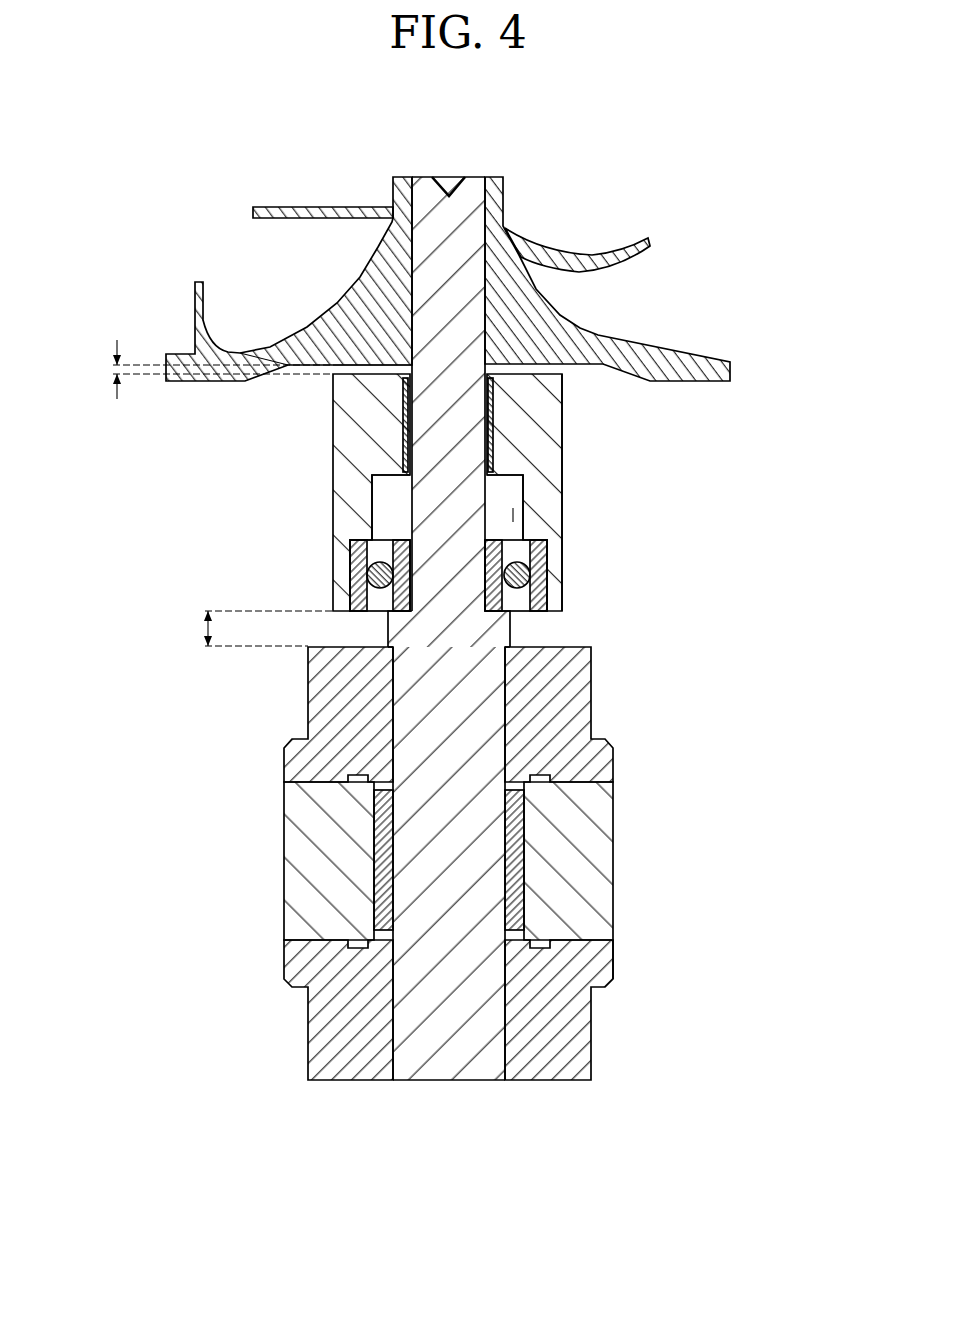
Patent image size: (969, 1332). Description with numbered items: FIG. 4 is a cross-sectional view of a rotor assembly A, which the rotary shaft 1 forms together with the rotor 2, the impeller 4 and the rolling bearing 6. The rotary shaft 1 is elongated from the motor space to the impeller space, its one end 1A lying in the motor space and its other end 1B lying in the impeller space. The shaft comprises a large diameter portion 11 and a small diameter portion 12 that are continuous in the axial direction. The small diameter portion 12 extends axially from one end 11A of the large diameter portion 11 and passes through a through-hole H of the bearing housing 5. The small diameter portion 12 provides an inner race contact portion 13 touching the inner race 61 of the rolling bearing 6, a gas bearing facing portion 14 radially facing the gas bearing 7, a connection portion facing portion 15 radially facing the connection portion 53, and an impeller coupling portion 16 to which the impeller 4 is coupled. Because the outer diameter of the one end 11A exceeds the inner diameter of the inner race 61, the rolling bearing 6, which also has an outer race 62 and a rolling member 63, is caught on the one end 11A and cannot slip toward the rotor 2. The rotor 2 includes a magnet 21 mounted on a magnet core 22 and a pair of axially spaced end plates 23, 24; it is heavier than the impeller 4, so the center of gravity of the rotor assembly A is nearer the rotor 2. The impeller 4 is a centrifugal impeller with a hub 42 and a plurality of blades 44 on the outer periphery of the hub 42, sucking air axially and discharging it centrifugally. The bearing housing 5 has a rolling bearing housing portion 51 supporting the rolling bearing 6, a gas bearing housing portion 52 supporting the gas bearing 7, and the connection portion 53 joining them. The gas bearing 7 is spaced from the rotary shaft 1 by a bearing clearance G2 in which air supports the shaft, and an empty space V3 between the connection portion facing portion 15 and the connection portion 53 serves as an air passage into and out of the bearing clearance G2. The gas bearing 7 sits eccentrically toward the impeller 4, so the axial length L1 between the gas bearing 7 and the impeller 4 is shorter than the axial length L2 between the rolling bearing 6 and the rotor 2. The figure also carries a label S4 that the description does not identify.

The rotary shaft 1 is at (460, 1086).
The one end 1A is at (421, 1080).
The other end 1B is at (450, 177).
The large diameter portion 11 is at (504, 1027).
The one end of the large diameter portion 11A is at (512, 625).
The small diameter portion 12 is at (380, 243).
The inner race contact portion 13 is at (453, 592).
The gas bearing facing portion 14 is at (453, 405).
The connection portion facing portion 15 is at (463, 494).
The impeller coupling portion 16 is at (470, 208).
The rotor 2 is at (405, 863).
The magnet 21 is at (300, 839).
The magnet core 22 is at (385, 880).
The end plate 23 is at (300, 762).
The end plate 24 is at (419, 1010).
The impeller 4 is at (448, 225).
The hub 42 is at (499, 193).
The blades 44 is at (610, 248).
The bearing housing 5 is at (384, 492).
The rolling bearing housing portion 51 is at (392, 575).
The gas bearing housing portion 52 is at (382, 430).
The connection portion 53 is at (358, 494).
The rolling bearing 6 is at (495, 576).
The inner race 61 is at (493, 600).
The outer race 62 is at (545, 550).
The rolling member 63 is at (530, 573).
The gas bearing 7 is at (332, 318).
The through-hole H is at (367, 393).
The bearing clearance G2 is at (495, 402).
The outer surface of housing S4 is at (562, 452).
The empty space V3 is at (513, 515).
The axial length L1 is at (209, 369).
The axial length L2 is at (256, 628).
The rotor assembly A is at (627, 1047).